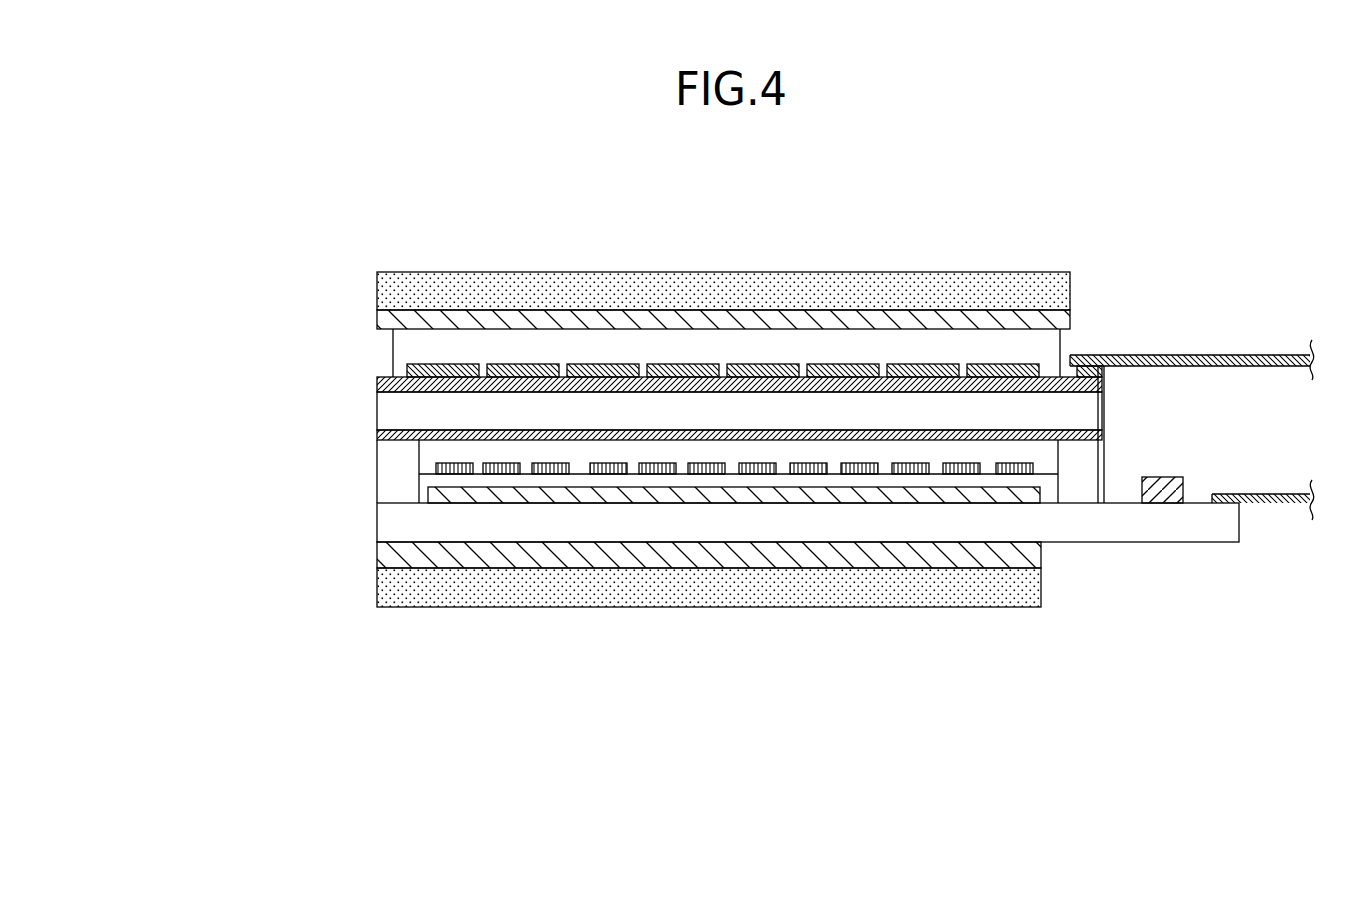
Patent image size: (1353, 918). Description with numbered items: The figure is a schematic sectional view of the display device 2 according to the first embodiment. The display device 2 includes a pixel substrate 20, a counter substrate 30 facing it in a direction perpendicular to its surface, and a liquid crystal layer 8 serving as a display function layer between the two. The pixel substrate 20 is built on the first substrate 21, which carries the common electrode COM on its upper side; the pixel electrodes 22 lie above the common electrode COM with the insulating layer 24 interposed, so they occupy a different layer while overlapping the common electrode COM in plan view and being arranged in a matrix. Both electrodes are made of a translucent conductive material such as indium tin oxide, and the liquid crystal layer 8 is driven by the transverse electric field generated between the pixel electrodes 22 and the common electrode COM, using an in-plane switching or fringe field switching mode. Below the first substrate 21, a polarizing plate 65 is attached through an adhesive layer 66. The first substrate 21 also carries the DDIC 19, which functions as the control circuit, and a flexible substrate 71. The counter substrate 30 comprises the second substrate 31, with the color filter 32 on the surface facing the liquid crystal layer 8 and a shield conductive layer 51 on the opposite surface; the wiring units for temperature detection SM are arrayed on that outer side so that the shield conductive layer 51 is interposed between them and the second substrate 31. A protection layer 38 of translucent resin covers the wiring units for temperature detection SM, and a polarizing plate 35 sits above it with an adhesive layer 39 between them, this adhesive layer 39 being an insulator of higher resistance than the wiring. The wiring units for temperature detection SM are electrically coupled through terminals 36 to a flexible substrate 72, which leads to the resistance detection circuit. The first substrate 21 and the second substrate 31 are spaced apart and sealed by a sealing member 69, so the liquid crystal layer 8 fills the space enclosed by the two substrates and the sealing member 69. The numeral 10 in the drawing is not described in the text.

The display device 2 is at (1144, 217).
The counter substrate 30 is at (243, 177).
The polarizing plate 35 is at (377, 290).
The adhesive layer 39 is at (377, 312).
The protection layer 38 is at (393, 343).
The wiring units for temperature detection SM is at (407, 367).
The shield conductive layer 51 is at (385, 384).
The second substrate 31 is at (385, 412).
The color filter 32 is at (377, 436).
The terminals 36 is at (1118, 355).
The flexible substrate 72 is at (1270, 355).
The liquid crystal layer 8 is at (428, 452).
The insulating layer 24 is at (1046, 489).
The sealing member 69 is at (1093, 478).
The pixel substrate 20 is at (230, 485).
The pixel electrodes 22 is at (433, 471).
The common electrode COM is at (428, 494).
The first substrate 21 is at (377, 521).
The DDIC 19 is at (1183, 489).
The flexible substrate 71 is at (1274, 494).
The backlight / display panel 10 is at (644, 608).
The adhesive layer 66 is at (377, 555).
The polarizing plate 65 is at (377, 588).